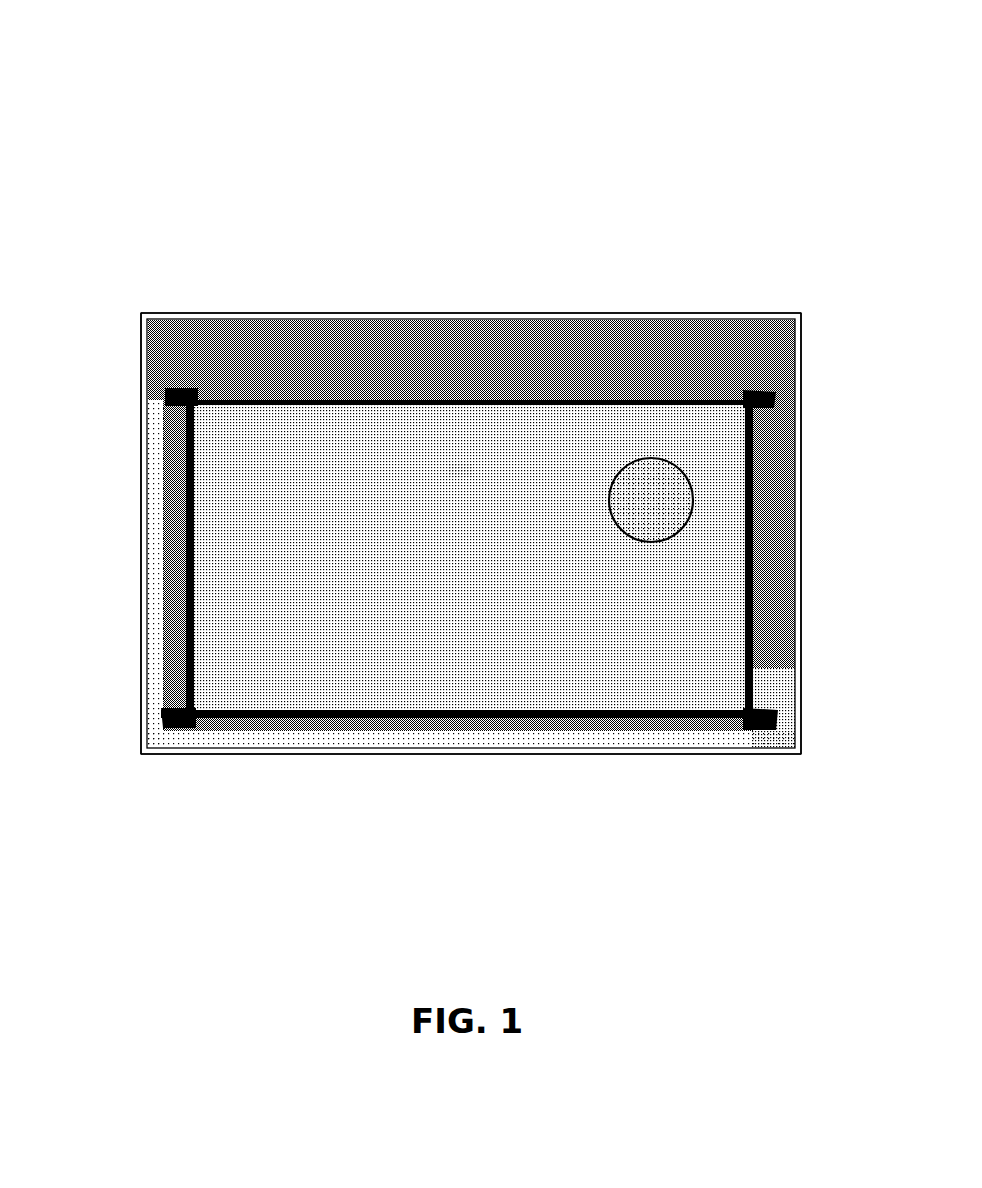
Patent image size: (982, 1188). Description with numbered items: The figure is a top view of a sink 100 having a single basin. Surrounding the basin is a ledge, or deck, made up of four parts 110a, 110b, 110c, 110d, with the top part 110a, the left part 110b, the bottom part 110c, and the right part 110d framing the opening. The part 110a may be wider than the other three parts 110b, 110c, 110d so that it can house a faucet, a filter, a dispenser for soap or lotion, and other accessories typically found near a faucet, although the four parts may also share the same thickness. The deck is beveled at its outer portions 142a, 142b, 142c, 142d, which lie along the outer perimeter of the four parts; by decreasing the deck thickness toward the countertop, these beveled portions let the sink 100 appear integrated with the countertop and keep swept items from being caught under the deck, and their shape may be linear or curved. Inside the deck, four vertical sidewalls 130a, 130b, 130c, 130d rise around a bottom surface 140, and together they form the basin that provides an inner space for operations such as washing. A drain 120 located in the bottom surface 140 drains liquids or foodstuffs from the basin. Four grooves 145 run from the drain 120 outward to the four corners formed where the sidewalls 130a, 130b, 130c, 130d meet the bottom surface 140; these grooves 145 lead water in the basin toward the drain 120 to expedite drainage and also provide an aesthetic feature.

The sink 100 is at (469, 426).
The part of ledge 110a is at (650, 290).
The part of ledge 110b is at (117, 505).
The part of ledge 110c is at (285, 739).
The part of ledge 110d is at (803, 505).
The beveled outer portion 142a is at (347, 310).
The beveled outer portion 142b is at (132, 668).
The beveled outer portion 142c is at (524, 742).
The beveled outer portion 142d is at (791, 668).
The vertical sidewall 130a is at (292, 408).
The vertical sidewall 130b is at (202, 512).
The vertical sidewall 130c is at (407, 690).
The vertical sidewall 130d is at (730, 606).
The drain 120 is at (596, 468).
The bottom surface 140 is at (469, 558).
The grooves 145 is at (452, 464).